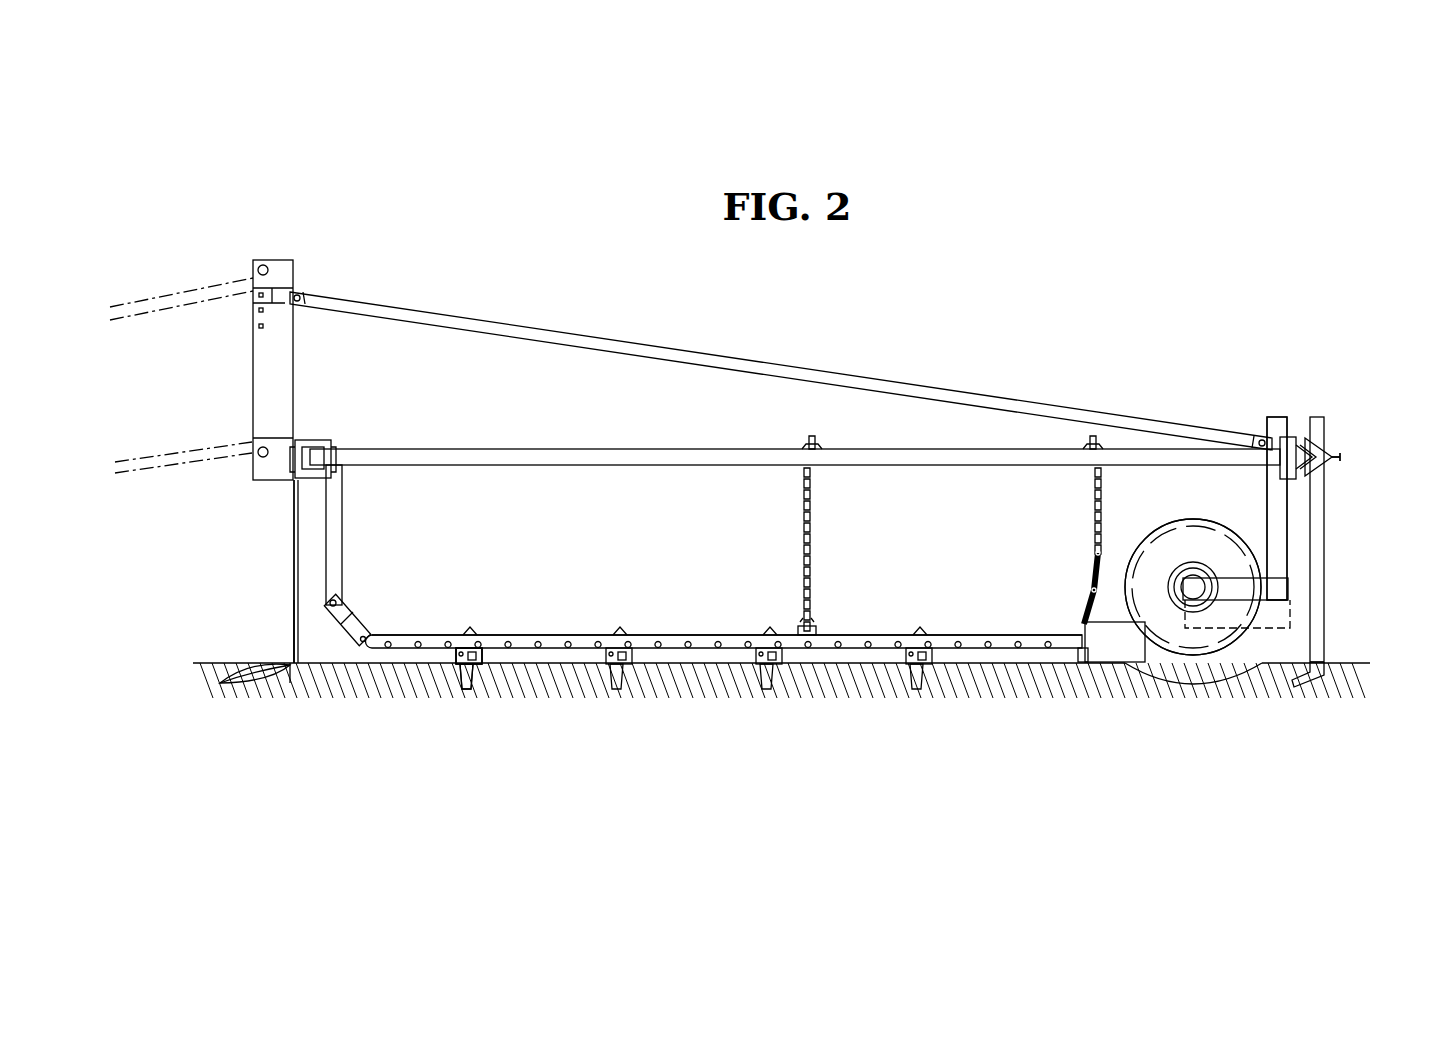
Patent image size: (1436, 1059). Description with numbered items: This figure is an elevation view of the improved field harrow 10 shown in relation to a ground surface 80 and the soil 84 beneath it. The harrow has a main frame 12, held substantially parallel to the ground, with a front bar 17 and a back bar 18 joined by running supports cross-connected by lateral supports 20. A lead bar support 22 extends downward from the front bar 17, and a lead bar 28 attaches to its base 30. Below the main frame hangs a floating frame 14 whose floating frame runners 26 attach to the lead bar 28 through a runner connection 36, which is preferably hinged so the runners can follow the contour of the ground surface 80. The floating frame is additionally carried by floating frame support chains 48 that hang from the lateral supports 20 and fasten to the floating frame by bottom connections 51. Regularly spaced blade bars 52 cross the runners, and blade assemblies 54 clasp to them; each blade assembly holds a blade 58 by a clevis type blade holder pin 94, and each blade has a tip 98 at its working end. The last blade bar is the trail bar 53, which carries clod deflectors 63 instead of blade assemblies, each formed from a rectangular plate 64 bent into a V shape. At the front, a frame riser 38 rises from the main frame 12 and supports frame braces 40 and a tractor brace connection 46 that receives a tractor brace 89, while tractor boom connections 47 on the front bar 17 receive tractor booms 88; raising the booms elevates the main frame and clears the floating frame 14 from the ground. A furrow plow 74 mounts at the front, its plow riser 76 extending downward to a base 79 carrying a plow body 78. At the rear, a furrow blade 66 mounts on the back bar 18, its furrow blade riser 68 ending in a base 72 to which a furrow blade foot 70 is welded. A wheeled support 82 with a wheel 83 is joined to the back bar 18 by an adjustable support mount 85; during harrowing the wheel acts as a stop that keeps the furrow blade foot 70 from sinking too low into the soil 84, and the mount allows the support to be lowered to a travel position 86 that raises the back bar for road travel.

The field harrow 10 is at (781, 312).
The main frame 12 is at (470, 448).
The floating frame 14 is at (606, 600).
The front bar 17 is at (322, 452).
The back bar 18 is at (1300, 450).
The lateral support 20 is at (1090, 436).
The lead bar support 22 is at (334, 545).
The floating frame runner 26 is at (722, 634).
The lead bar 28 is at (294, 600).
The base 30 is at (338, 600).
The runner connection 36 is at (352, 614).
The frame riser 38 is at (285, 325).
The frame brace 40 is at (355, 300).
The tractor brace connection 46 is at (268, 268).
The tractor boom connection 47 is at (268, 450).
The floating frame support chain 48 is at (812, 595).
The bottom connection 51 is at (818, 630).
The blade bar 52 is at (634, 672).
The trail bar 53 is at (1085, 656).
The blade assembly 54 is at (485, 680).
The blade 58 is at (468, 688).
The clod deflector 63 is at (1112, 640).
The rectangular plate 64 is at (1090, 605).
The furrow blade 66 is at (1335, 548).
The furrow blade riser 68 is at (1343, 462).
The furrow blade foot 70 is at (1298, 688).
The base 72 is at (1328, 658).
The furrow plow 74 is at (283, 648).
The plow riser 76 is at (293, 575).
The plow body 78 is at (236, 688).
The base 79 is at (298, 672).
The ground surface 80 is at (190, 655).
The wheeled support 82 is at (1247, 507).
The wheel 83 is at (1186, 548).
The soil 84 is at (280, 690).
The adjustable support mount 85 is at (1284, 445).
The travel position 86 is at (1260, 632).
The tractor boom 88 is at (170, 464).
The tractor brace 89 is at (232, 278).
The blade holder pin 94 is at (773, 672).
The tip 98 is at (463, 678).